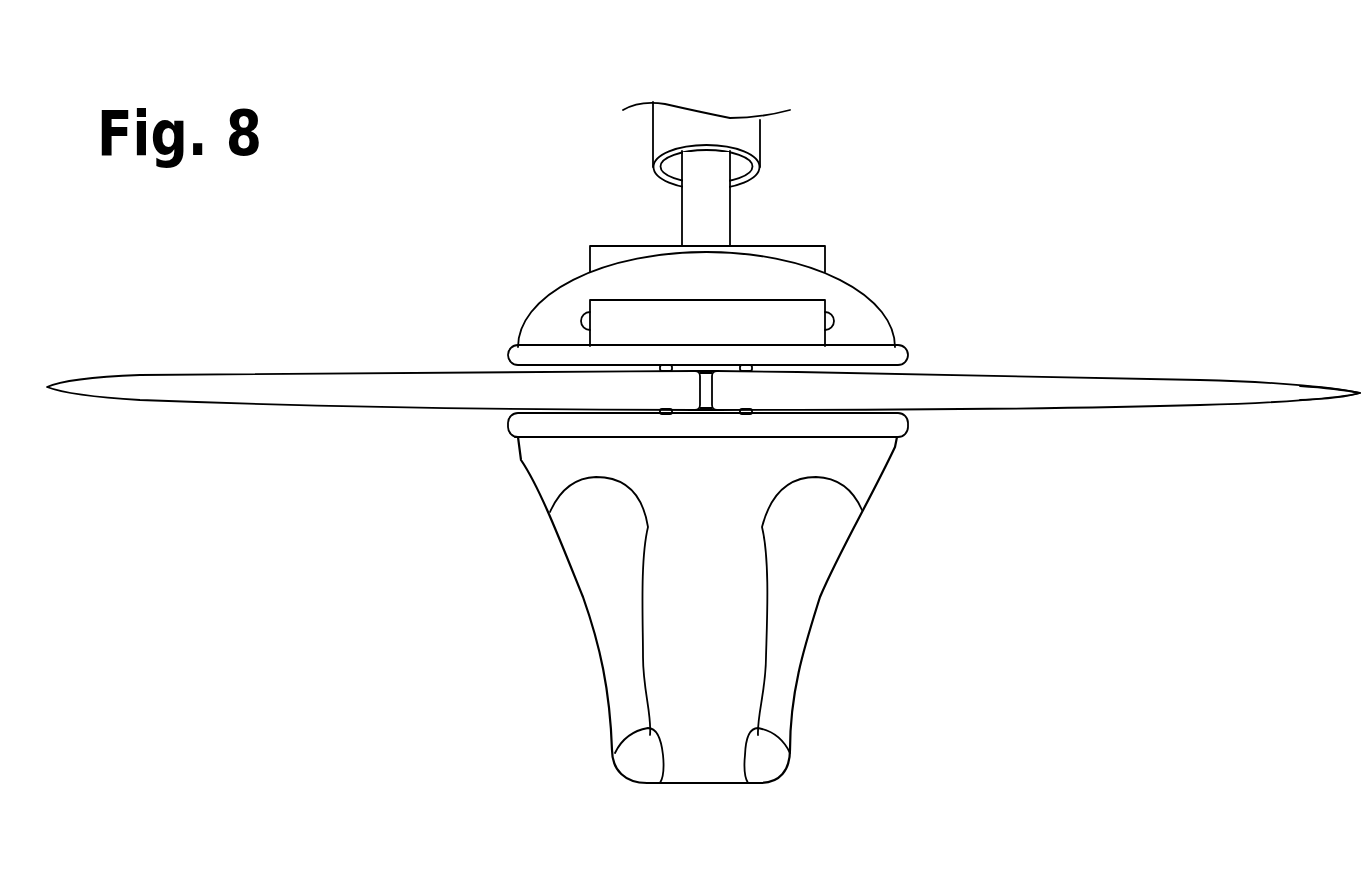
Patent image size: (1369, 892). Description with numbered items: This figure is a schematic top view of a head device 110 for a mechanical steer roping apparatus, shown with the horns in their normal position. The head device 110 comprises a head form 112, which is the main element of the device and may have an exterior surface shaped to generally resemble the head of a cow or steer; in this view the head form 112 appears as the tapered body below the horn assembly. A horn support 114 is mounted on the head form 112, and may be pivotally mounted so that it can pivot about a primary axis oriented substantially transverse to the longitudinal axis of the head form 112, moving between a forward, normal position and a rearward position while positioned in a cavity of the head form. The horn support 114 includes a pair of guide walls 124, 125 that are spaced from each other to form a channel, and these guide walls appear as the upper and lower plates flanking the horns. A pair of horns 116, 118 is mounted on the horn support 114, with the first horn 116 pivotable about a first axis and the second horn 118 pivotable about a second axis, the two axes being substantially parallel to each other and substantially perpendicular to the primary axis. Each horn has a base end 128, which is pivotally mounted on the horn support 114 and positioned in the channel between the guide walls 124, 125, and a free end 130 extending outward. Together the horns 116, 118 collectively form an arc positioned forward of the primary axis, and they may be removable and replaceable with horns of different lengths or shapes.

The head device 110 is at (875, 227).
The head form 112 is at (843, 463).
The horn support 114 is at (863, 357).
The first horn 116 is at (234, 387).
The second horn 118 is at (1067, 390).
The guide wall 124 is at (528, 423).
The guide wall 125 is at (543, 355).
The base end 128 is at (732, 392).
The free end 130 is at (1333, 393).